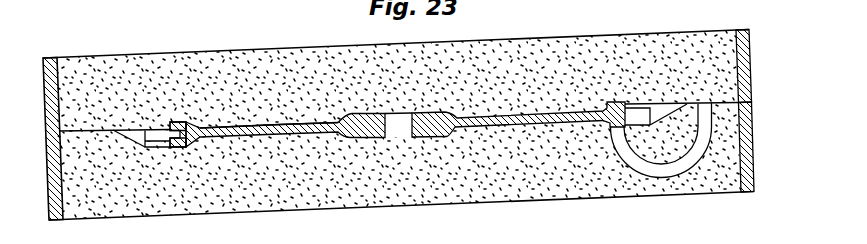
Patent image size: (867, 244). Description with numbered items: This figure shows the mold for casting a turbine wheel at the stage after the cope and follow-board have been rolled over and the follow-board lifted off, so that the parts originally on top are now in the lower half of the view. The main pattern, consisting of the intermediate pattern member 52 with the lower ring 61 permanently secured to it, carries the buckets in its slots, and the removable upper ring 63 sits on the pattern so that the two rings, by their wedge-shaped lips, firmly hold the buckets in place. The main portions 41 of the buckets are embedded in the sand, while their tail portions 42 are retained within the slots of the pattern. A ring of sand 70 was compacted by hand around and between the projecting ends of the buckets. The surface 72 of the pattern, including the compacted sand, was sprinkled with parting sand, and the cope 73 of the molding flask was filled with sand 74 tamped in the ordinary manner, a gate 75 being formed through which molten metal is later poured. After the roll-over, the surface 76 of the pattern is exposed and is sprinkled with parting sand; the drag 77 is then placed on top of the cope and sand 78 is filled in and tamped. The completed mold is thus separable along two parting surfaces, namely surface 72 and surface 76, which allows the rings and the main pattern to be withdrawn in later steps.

The sand 78 is at (112, 83).
The lower ring 61 is at (172, 121).
The tail portions 42 is at (178, 121).
The intermediate pattern member 52 is at (207, 125).
The surface of the pattern 76 is at (267, 123).
The drag 77 is at (751, 68).
The gate 75 is at (702, 124).
The cope 73 is at (752, 133).
The ring of sand 70 is at (130, 140).
The main portions 41 is at (155, 141).
The upper ring 63 is at (177, 148).
The sand 74 is at (250, 198).
The surface of the pattern 72 is at (312, 137).